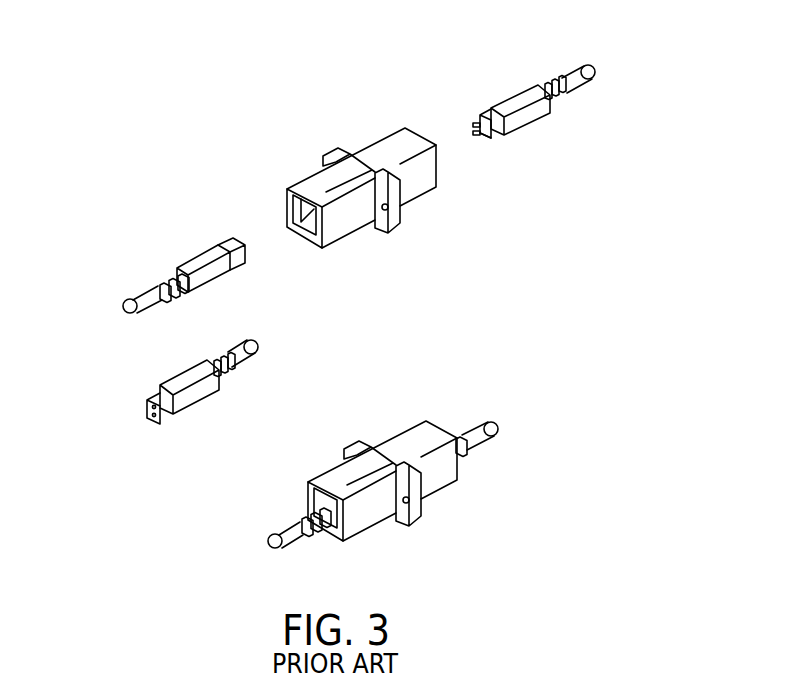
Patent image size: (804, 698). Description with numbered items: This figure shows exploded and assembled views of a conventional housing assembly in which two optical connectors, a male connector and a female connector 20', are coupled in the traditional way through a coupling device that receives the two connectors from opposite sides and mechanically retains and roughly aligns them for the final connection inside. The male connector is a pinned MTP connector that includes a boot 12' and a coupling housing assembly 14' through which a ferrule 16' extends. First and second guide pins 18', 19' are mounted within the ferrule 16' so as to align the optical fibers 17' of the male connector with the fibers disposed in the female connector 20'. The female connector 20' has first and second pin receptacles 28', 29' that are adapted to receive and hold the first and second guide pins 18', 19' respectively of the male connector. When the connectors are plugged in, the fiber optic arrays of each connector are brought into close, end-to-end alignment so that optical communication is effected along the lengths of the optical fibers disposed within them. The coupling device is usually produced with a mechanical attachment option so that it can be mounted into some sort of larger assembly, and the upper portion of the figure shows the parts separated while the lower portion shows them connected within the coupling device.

The boot 12' is at (548, 53).
The coupling housing assembly 14' is at (520, 75).
The ferrule 16' is at (473, 89).
The optical fibers 17' is at (499, 172).
The first guide pin 18' is at (445, 111).
The second guide pin 19' is at (465, 171).
The female connector 20' is at (304, 416).
The first pin receptacle 28' is at (141, 371).
The second pin receptacle 29' is at (167, 452).